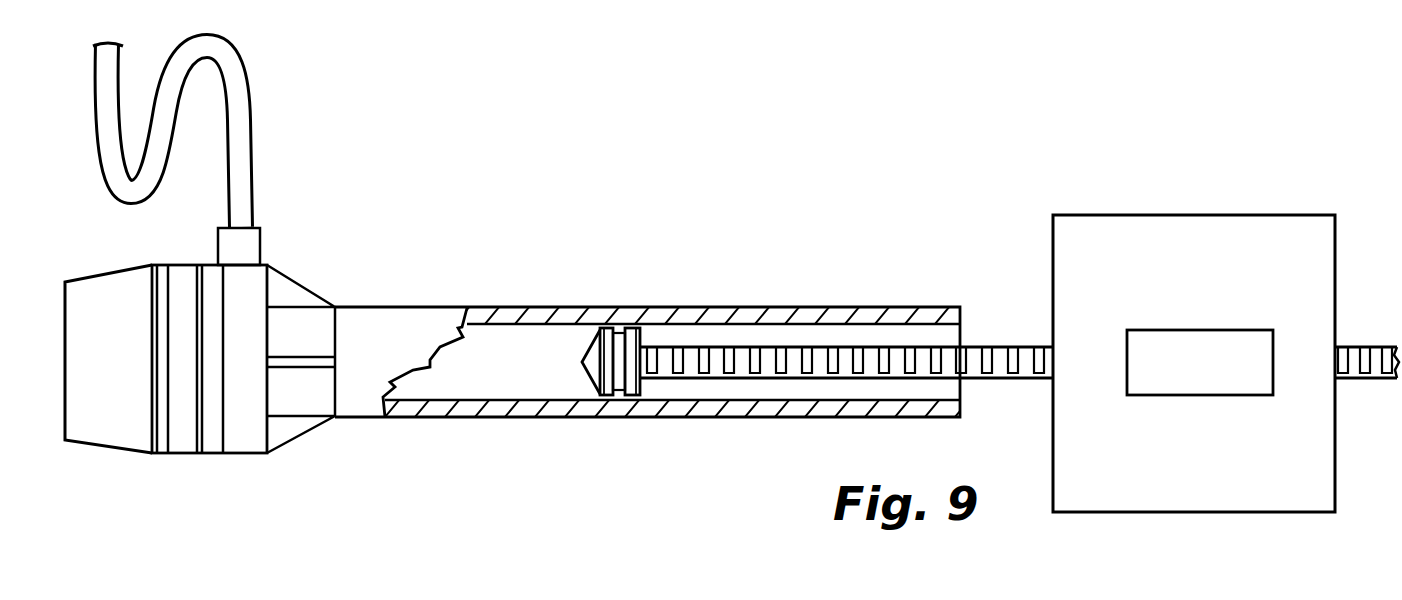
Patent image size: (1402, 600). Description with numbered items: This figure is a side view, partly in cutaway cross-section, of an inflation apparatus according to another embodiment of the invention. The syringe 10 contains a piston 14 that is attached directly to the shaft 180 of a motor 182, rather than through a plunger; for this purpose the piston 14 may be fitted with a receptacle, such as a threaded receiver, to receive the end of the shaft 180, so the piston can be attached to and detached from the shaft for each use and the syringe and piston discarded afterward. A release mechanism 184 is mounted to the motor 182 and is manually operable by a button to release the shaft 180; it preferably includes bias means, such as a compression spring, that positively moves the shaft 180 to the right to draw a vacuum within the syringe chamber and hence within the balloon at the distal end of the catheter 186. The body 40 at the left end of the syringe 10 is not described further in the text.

The tubular housing 10 is at (673, 423).
The plunger 14 is at (643, 338).
The handle body 40 is at (185, 456).
The rack 180 is at (893, 353).
The control unit 182 is at (1182, 512).
The display 184 is at (1232, 370).
The cable 186 is at (235, 126).